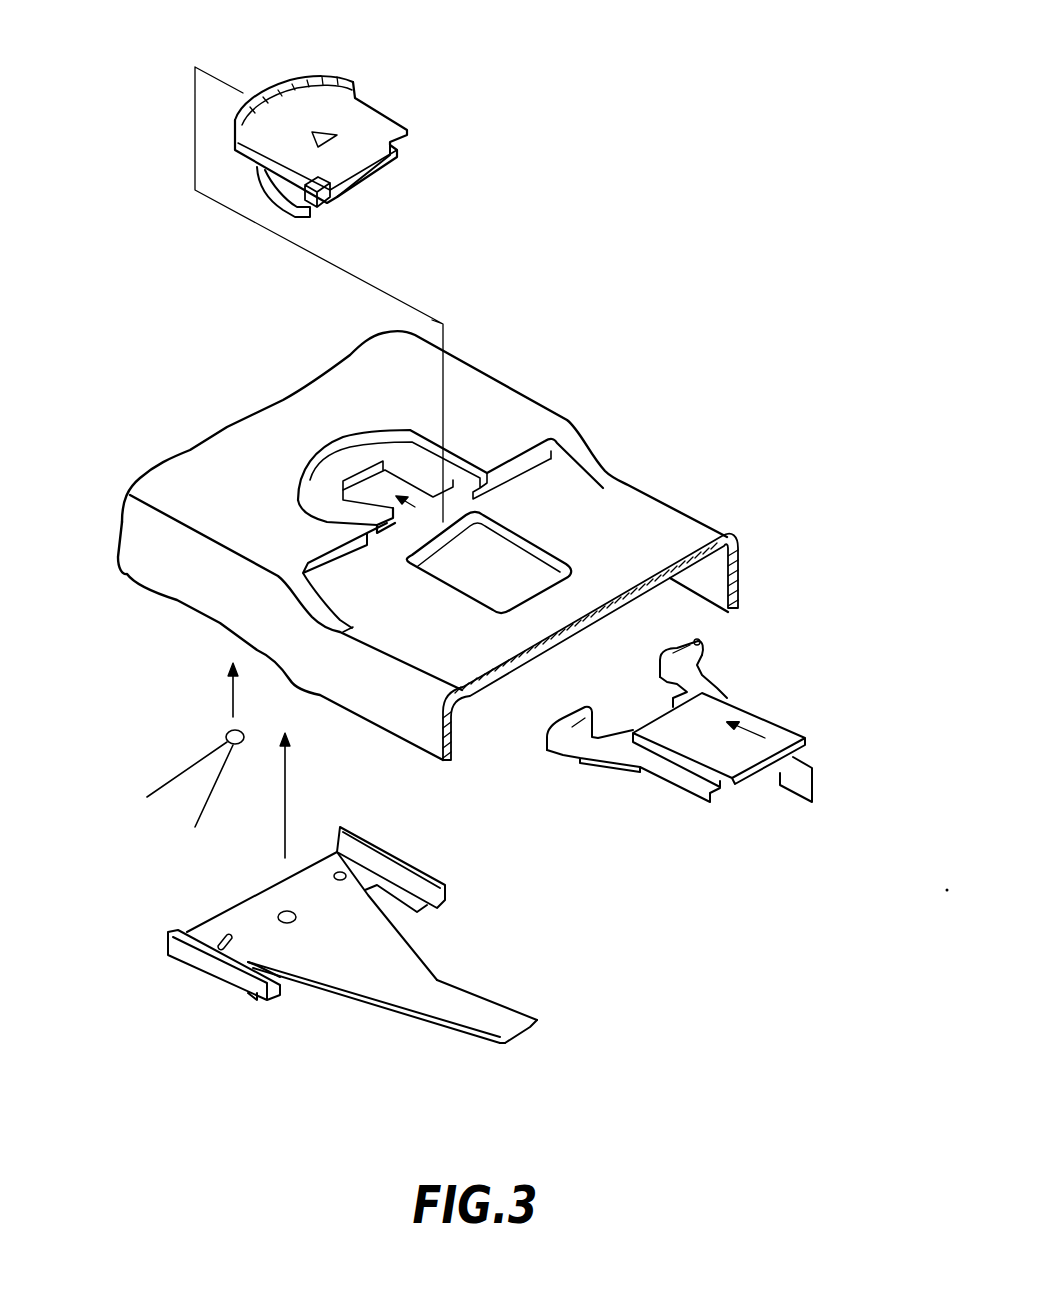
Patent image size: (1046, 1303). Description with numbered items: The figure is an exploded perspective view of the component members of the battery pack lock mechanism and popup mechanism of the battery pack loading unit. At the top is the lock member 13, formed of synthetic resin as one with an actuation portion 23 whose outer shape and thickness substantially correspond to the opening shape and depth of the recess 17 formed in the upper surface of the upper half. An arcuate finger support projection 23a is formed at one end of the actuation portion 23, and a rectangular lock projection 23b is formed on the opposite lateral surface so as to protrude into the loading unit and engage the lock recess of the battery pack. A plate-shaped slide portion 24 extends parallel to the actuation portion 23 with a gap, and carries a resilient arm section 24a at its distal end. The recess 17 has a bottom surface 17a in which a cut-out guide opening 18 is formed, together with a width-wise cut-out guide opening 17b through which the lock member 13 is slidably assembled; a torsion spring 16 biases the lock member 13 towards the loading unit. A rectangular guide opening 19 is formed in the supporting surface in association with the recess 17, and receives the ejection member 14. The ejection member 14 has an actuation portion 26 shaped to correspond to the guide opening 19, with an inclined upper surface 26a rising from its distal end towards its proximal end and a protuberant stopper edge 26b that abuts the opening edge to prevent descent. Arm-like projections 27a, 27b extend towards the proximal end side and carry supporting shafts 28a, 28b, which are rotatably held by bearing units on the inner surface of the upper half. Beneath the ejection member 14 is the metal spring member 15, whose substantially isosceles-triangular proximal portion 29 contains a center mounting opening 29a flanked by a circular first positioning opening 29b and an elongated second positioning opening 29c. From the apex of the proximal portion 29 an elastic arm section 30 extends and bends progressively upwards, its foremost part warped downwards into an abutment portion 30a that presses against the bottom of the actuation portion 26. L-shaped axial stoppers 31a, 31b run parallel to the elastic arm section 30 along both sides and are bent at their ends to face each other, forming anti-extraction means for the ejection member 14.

The lock member 13 is at (415, 112).
The ejection member 14 is at (820, 714).
The spring member 15 is at (237, 895).
The torsion spring 16 is at (187, 763).
The recess 17 is at (347, 467).
The bottom surface of the recess 17a is at (337, 502).
The cut-out guide opening 17b is at (363, 527).
The cut-out guide opening 18 is at (388, 487).
The guide opening 19 is at (518, 570).
The actuation portion 23 is at (362, 118).
The finger support projection 23a is at (323, 80).
The lock projection 23b is at (377, 165).
The slide portion 24 is at (330, 203).
The resilient arm section 24a is at (320, 217).
The actuation portion 26 is at (702, 772).
The upper surface 26a is at (728, 747).
The protuberant stopper edge 26b is at (778, 767).
The arm-like projection 27a is at (715, 682).
The arm-like projection 27b is at (603, 748).
The supporting shaft 28a is at (683, 640).
The supporting shaft 28b is at (573, 712).
The proximal portion 29 is at (320, 953).
The mounting opening 29a is at (287, 910).
The first positioning opening 29b is at (340, 870).
The second positioning opening 29c is at (213, 937).
The elastic arm section 30 is at (443, 1002).
The abutment portion 30a is at (523, 1037).
The axial stopper 31a is at (443, 900).
The axial stopper 31b is at (270, 1000).